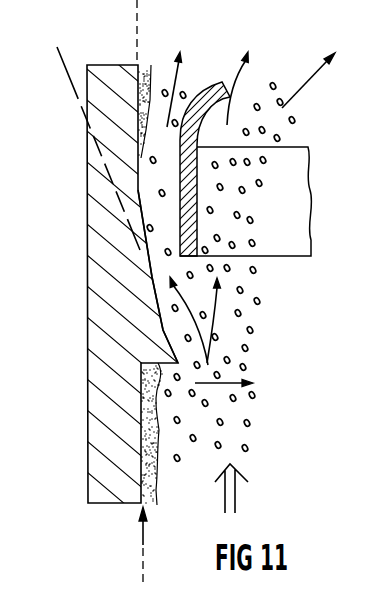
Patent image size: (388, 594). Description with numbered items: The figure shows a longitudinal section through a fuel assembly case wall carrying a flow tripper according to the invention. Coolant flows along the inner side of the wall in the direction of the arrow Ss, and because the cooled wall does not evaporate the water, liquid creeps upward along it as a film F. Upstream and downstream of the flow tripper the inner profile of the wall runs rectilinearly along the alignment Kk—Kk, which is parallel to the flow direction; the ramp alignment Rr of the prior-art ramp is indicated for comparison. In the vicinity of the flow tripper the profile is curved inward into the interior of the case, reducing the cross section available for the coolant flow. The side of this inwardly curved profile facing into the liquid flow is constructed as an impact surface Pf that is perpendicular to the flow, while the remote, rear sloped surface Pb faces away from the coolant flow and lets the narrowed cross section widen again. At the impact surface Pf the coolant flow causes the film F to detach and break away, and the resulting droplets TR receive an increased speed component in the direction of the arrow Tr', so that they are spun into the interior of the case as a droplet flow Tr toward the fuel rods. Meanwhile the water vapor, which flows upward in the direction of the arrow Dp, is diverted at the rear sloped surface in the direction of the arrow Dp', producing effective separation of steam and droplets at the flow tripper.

The alignment Kk is at (132, 25).
The ramp alignment Rr is at (70, 83).
The water vapor flow direction Dp is at (207, 81).
The droplet flow Tr is at (313, 83).
The droplets TR is at (259, 301).
The diverted steam direction Dp' is at (127, 321).
The rear sloped surface Pb is at (178, 344).
The impact surface Pf is at (141, 361).
The droplet speed direction Tr' is at (245, 377).
The film F is at (156, 508).
The flow direction Ss is at (236, 494).